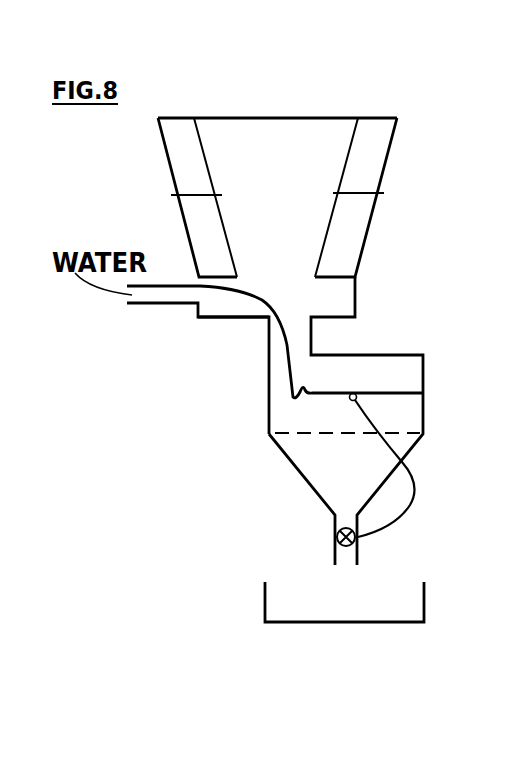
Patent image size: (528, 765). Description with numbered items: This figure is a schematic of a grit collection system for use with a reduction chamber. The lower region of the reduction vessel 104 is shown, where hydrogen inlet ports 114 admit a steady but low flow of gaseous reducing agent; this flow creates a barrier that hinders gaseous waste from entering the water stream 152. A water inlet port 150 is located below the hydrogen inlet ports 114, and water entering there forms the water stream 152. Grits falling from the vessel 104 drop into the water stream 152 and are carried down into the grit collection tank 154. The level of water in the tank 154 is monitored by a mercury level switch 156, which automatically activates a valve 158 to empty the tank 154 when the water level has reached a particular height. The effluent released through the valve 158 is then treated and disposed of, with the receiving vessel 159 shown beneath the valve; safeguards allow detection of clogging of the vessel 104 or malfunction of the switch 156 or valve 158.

The reduction vessel 104 is at (143, 143).
The hydrogen inlet ports 114 is at (174, 195).
The water inlet port 150 is at (158, 303).
The water stream 152 is at (217, 310).
The grit collection tank 154 is at (413, 452).
The mercury level switch 156 is at (411, 502).
The valve 158 is at (358, 538).
The collection tray 159 is at (425, 612).